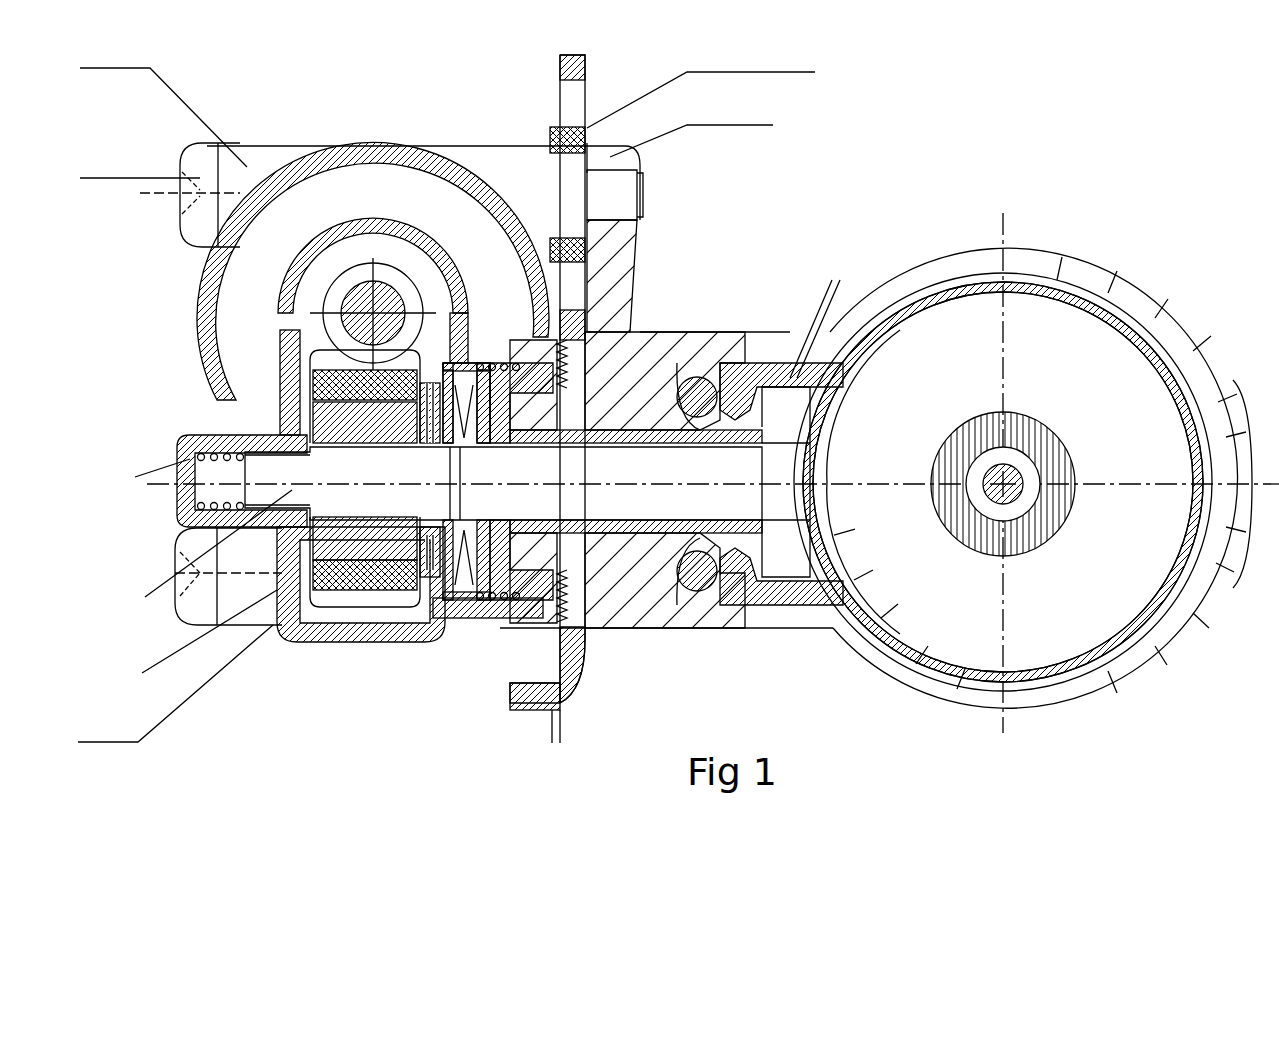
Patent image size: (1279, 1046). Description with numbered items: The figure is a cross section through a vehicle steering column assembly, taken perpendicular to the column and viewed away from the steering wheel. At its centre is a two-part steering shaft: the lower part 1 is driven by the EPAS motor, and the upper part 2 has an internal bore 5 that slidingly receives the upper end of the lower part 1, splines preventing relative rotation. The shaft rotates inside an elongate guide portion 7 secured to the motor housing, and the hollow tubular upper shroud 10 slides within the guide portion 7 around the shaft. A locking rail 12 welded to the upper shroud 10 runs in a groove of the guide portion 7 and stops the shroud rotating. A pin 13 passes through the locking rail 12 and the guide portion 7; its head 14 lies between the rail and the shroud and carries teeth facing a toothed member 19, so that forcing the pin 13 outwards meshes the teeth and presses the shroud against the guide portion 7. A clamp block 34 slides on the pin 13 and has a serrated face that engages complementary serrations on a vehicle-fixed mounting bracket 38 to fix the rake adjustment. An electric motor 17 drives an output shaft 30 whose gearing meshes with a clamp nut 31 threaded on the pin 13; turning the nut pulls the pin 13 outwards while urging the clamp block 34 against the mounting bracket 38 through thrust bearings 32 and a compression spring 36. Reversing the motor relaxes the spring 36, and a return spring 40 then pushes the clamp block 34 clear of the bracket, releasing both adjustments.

The lower part of steering shaft 1 is at (1013, 475).
The upper part of steering shaft 2 is at (1045, 480).
The internal bore 5 is at (983, 450).
The guide portion 7 is at (1162, 307).
The upper shroud 10 is at (1032, 282).
The locking rail 12 is at (762, 600).
The pin 13 is at (603, 463).
The pin head 14 is at (810, 597).
The electric motor 17 is at (377, 177).
The toothed member 19 is at (757, 380).
The output shaft 30 is at (330, 287).
The clamp nut 31 is at (335, 340).
The thrust bearings 32 is at (428, 598).
The clamp block 34 is at (483, 333).
The compression spring 36 is at (458, 600).
The mounting bracket 38 is at (588, 668).
The return spring 40 is at (490, 363).